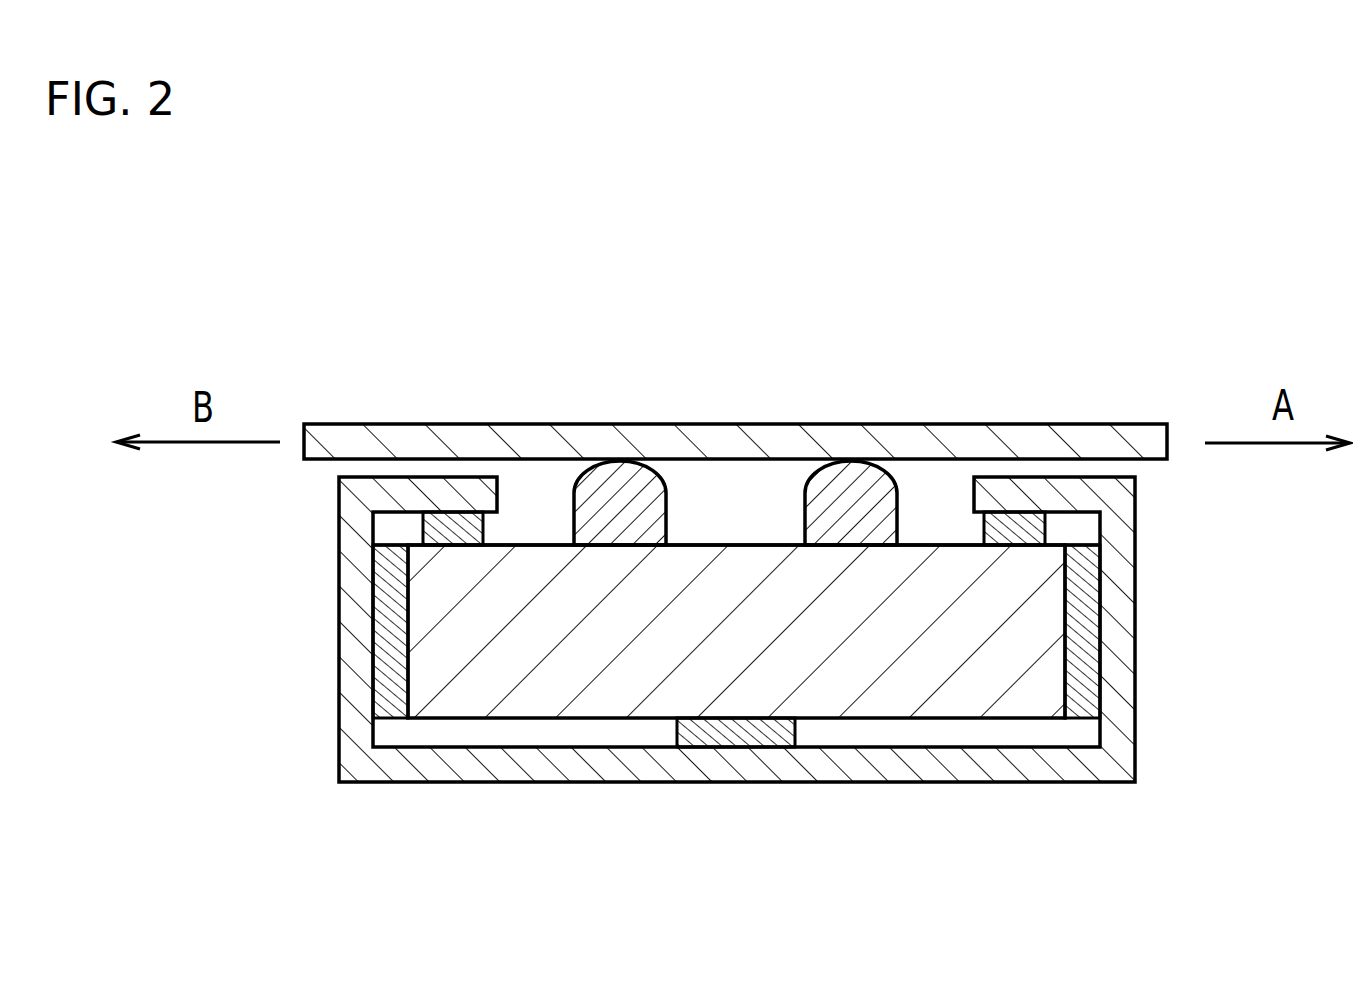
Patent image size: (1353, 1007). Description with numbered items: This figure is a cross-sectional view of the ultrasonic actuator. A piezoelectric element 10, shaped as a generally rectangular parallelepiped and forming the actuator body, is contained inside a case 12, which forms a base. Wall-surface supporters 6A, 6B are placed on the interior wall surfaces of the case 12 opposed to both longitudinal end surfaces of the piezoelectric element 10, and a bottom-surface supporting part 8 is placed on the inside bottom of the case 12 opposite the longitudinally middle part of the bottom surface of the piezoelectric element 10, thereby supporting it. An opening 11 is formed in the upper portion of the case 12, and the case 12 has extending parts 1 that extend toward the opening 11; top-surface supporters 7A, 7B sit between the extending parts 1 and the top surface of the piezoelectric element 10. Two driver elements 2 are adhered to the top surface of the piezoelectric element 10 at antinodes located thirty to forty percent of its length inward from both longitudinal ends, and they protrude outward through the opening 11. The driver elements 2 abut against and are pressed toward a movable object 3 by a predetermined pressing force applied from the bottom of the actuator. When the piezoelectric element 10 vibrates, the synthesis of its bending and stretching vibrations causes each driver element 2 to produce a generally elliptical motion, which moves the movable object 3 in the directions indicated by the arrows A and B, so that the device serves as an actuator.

The extending part 1 is at (1010, 497).
The driver element 2 is at (735, 442).
The movable object 3 is at (1092, 440).
The wall-surface supporter 6A is at (1080, 683).
The wall-surface supporter 6B is at (388, 620).
The top-surface supporter 7A is at (1006, 527).
The top-surface supporter 7B is at (452, 527).
The bottom-surface supporting part 8 is at (730, 737).
The piezoelectric element 10 is at (520, 688).
The opening 11 is at (933, 492).
The case 12 is at (1120, 622).